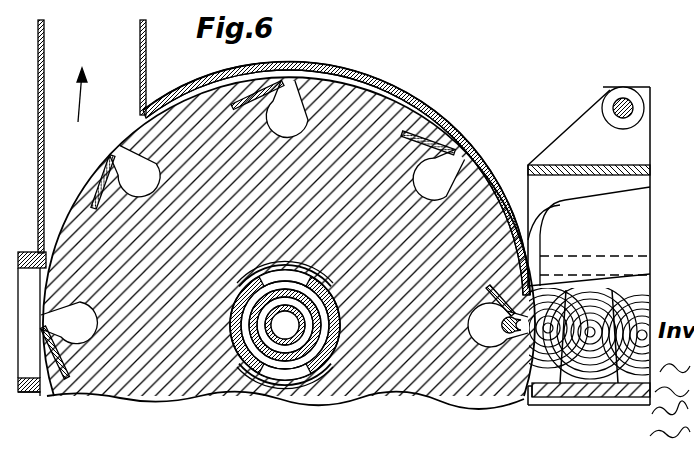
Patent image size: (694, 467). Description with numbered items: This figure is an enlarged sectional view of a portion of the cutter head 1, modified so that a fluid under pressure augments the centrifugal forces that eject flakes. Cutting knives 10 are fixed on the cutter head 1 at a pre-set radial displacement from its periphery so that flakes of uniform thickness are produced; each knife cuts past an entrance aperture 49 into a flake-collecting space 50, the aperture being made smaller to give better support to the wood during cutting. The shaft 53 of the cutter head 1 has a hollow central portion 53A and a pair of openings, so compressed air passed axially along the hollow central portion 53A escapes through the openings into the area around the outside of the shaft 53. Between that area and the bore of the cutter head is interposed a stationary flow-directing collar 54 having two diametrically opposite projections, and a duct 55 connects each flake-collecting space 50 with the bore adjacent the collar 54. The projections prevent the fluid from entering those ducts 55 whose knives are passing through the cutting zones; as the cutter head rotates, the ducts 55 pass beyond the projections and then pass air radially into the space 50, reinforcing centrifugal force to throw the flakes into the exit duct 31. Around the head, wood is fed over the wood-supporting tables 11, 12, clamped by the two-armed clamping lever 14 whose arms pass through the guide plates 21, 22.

The cutter head 1 is at (376, 118).
The cutting knife 10 is at (453, 146).
The wood-supporting table 11 is at (25, 250).
The wood-supporting table 12 is at (548, 386).
The two-armed clamping lever 14 is at (584, 196).
The guide plate 21 is at (28, 390).
The guide plate 22 is at (594, 261).
The exit duct 31 is at (91, 79).
The entrance aperture 49 is at (290, 112).
The flake-collecting space 50 is at (316, 95).
The shaft 53 is at (266, 362).
The hollow central portion 53A is at (288, 343).
The collar 54 is at (232, 368).
The duct 55 is at (178, 322).